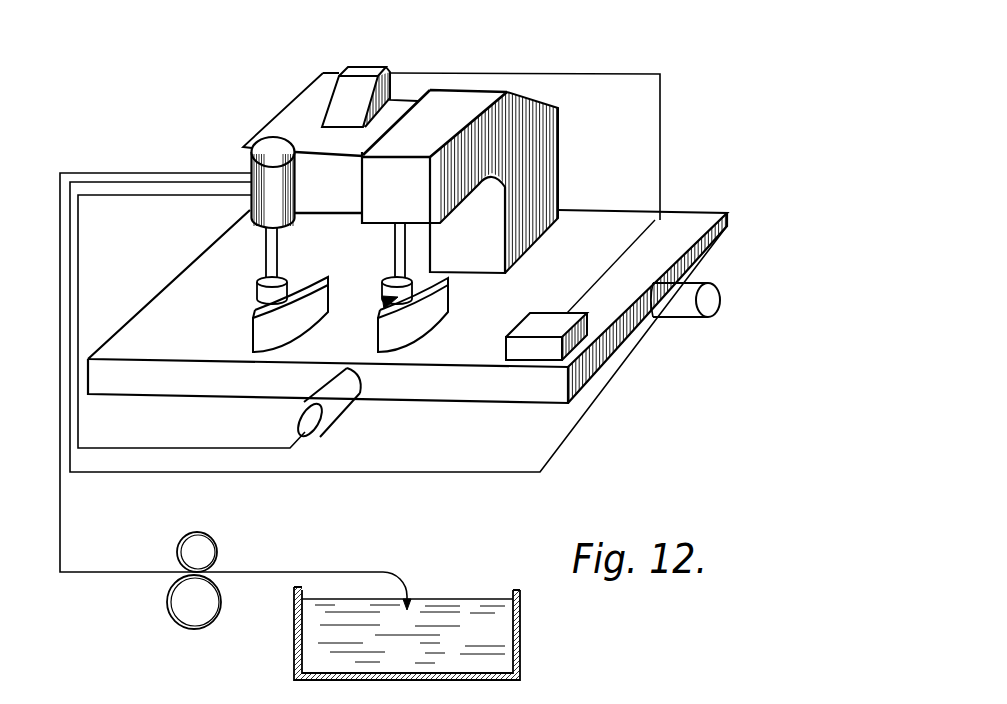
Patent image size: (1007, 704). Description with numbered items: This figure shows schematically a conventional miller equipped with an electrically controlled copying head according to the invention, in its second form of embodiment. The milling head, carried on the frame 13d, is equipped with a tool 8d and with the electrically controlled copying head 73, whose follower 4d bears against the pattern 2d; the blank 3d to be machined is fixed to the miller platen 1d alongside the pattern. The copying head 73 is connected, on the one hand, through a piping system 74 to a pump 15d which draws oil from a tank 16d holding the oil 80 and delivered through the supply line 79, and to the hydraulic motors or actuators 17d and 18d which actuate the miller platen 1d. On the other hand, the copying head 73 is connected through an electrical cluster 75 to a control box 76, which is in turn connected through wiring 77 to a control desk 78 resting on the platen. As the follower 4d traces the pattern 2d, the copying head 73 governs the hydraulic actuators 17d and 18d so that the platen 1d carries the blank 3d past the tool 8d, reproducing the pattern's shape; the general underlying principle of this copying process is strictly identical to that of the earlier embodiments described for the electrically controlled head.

The miller platen 1d is at (590, 370).
The pattern 2d is at (323, 276).
The blank 3d is at (447, 300).
The follower 4d is at (257, 296).
The tool 8d is at (384, 303).
The frame 13d is at (478, 98).
The pump 15d is at (207, 545).
The tank 16d is at (507, 637).
The hydraulic motor or actuator 17d is at (360, 382).
The hydraulic motor or actuator 18d is at (670, 297).
The electrically controlled copying head 73 is at (273, 182).
The piping system 74 is at (207, 472).
The electrical cluster 75 is at (267, 113).
The control box 76 is at (362, 68).
The wiring 77 is at (640, 75).
The control desk 78 is at (540, 318).
The wire 79 is at (267, 701).
The liquid 80 is at (401, 700).